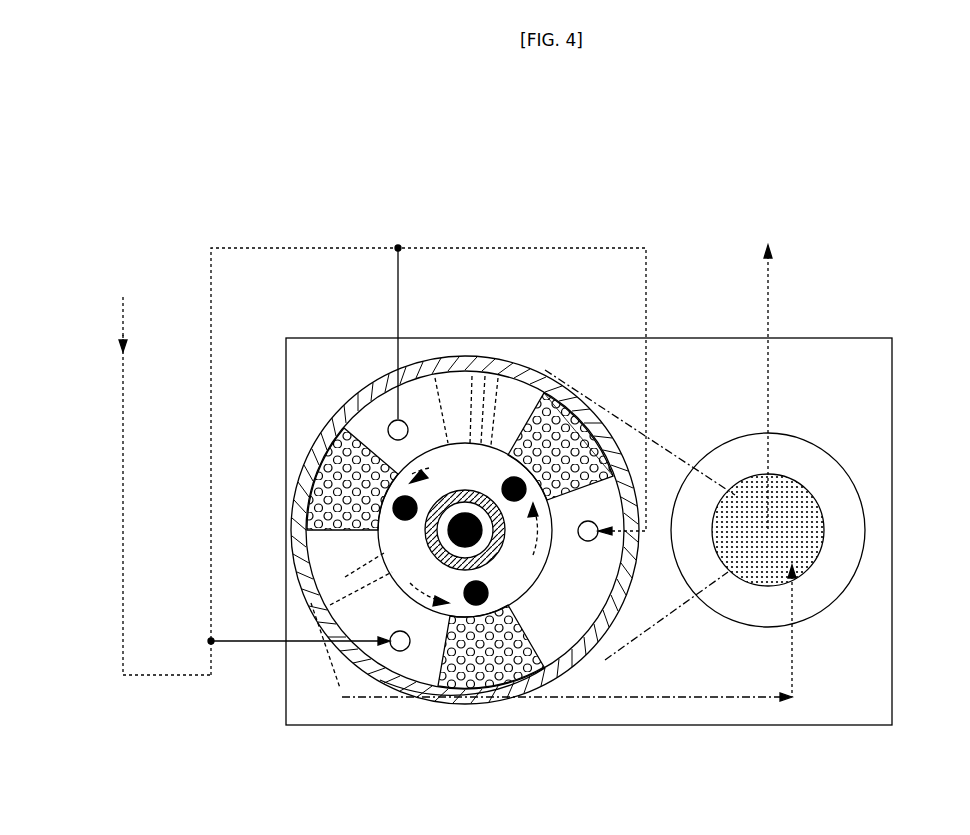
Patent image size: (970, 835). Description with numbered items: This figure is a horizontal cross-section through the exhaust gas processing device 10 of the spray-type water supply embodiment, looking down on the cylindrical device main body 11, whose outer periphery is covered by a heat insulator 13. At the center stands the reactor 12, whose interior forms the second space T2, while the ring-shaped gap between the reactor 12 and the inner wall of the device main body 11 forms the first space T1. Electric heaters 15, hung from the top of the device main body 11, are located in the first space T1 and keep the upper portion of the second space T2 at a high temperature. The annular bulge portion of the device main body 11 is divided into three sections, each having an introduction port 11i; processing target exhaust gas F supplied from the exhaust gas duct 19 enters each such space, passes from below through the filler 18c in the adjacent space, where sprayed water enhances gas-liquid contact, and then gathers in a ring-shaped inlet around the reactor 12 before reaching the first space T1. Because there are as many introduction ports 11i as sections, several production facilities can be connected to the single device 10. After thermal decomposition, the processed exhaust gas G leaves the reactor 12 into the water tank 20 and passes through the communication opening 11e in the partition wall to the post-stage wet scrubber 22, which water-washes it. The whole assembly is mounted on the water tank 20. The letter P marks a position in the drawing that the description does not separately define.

The exhaust gas processing device 10 is at (418, 218).
The device main body 11 is at (310, 421).
The introduction port 11i is at (390, 418).
The communication opening 11e is at (558, 628).
The reactor 12 is at (432, 541).
The heat insulator 13 is at (490, 668).
The electric heater 15 is at (470, 606).
The filler 18c is at (553, 400).
The exhaust gas duct 19 is at (118, 478).
The water tank 20 is at (632, 736).
The post-stage wet scrubber 22 is at (842, 576).
The processing target exhaust gas F is at (122, 322).
The processed exhaust gas G is at (670, 610).
The rotation direction P is at (431, 590).
The first space T1 is at (448, 527).
The second space T2 is at (462, 520).